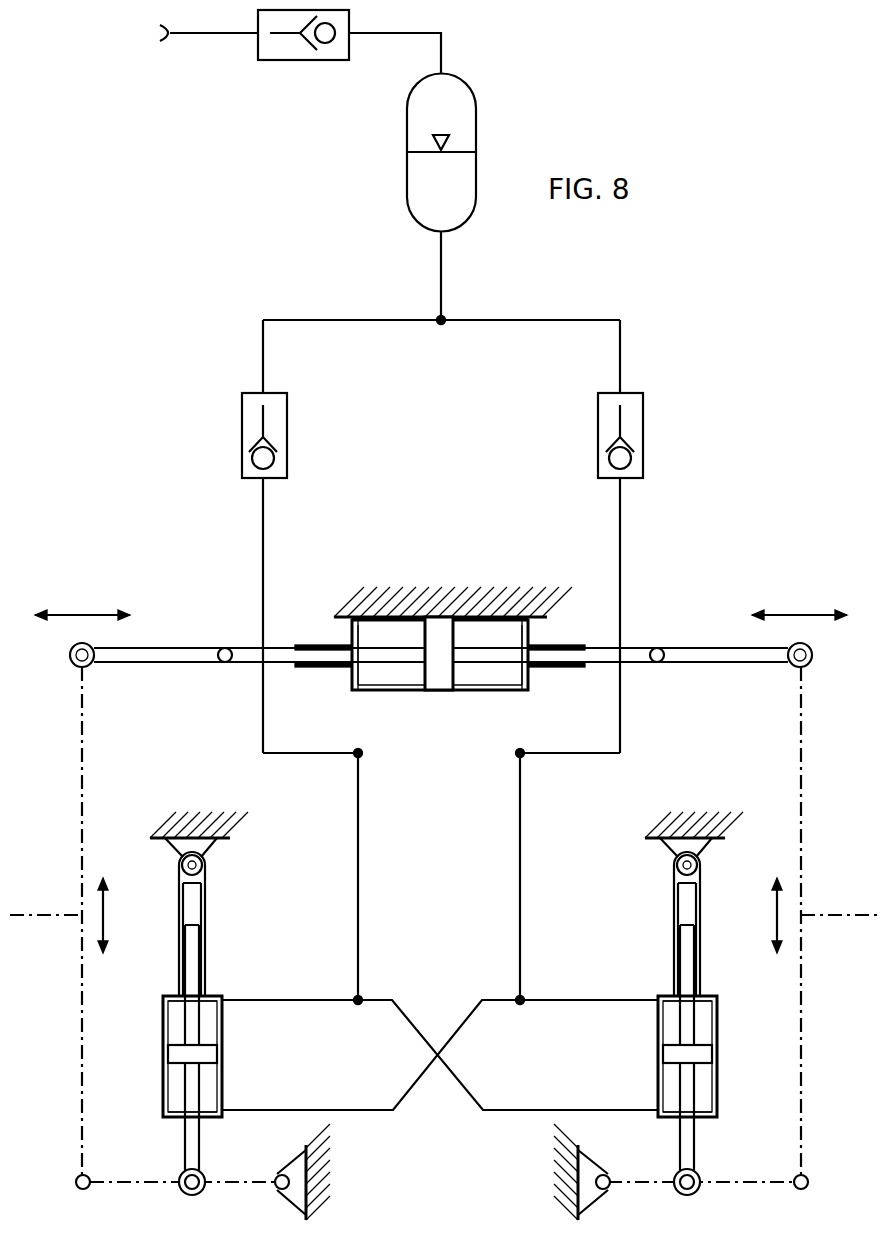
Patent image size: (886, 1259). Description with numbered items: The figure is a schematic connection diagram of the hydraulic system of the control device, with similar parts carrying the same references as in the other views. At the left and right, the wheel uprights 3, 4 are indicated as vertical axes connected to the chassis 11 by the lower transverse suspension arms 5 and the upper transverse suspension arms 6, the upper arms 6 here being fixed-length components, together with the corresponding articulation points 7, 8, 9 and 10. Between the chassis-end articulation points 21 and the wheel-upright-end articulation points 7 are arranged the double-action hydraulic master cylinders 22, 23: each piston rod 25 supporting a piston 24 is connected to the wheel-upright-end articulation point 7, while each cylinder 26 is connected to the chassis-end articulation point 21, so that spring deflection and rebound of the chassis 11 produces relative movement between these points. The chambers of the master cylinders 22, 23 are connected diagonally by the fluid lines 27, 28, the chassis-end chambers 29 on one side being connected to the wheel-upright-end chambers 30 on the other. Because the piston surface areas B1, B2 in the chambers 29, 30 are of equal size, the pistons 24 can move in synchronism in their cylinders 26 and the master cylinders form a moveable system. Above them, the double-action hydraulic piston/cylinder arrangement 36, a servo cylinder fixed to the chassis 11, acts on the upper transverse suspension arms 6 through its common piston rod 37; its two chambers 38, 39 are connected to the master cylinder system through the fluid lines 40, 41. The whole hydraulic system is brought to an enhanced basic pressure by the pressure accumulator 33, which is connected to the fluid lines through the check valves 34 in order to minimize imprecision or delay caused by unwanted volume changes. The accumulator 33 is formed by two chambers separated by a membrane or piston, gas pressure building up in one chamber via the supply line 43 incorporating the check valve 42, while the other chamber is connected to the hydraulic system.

The wheel upright 3 is at (80, 812).
The wheel upright 4 is at (805, 812).
The lower transverse suspension arm 5 is at (138, 1186).
The upper transverse suspension arm 6 is at (163, 650).
The articulation point 7 is at (80, 1189).
The articulation point 8 is at (277, 1190).
The articulation point 9 is at (70, 655).
The articulation point 10 is at (225, 648).
The chassis 11 is at (500, 600).
The chassis-end articulation point 21 is at (205, 864).
The master cylinder 22 is at (214, 954).
The master cylinder 23 is at (667, 954).
The piston 24 is at (217, 1053).
The piston rod 25 is at (186, 1142).
The cylinder 26 is at (222, 1090).
The fluid line 27 is at (577, 998).
The fluid line 28 is at (297, 998).
The chassis-end chamber 29 is at (165, 1010).
The wheel-upright-end chamber 30 is at (165, 1105).
The pressure accumulator 33 is at (462, 110).
The check valve 34 is at (288, 418).
The piston/cylinder arrangement 36 is at (437, 688).
The common piston rod 37 is at (397, 655).
The chamber 38 is at (376, 673).
The chamber 39 is at (503, 673).
The fluid line 40 is at (362, 825).
The fluid line 41 is at (518, 828).
The check valve 42 is at (296, 62).
The supply line 43 is at (212, 38).
The piston surface area B1 is at (207, 1045).
The piston surface area B2 is at (168, 1070).